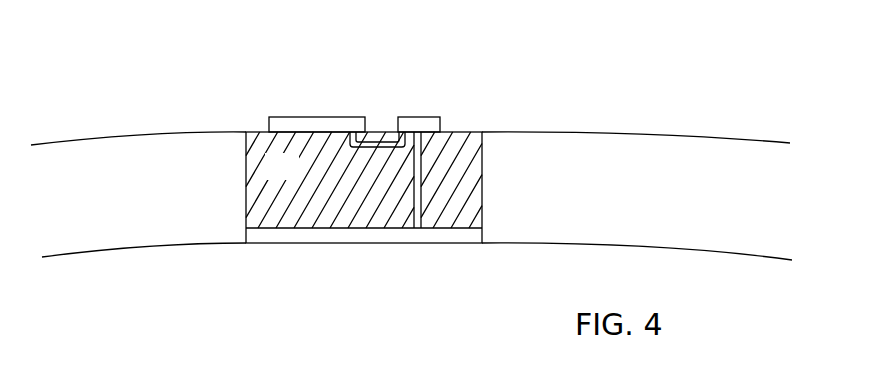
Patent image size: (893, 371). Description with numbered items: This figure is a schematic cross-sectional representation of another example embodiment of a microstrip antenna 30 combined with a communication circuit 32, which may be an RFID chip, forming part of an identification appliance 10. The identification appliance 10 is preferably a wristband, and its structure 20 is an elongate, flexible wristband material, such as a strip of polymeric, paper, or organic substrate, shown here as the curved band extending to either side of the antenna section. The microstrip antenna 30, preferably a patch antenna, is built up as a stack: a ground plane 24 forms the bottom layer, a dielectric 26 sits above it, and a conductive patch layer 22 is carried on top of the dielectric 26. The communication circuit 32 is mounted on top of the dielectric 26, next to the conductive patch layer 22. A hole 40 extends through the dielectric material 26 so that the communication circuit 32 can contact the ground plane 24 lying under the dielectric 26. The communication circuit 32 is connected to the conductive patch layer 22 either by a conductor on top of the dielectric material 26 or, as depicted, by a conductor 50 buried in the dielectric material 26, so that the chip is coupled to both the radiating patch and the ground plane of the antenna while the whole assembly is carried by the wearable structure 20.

The identification appliance 10 is at (180, 97).
The structure 20 is at (198, 197).
The conductive patch layer 22 is at (281, 123).
The ground plane 24 is at (258, 240).
The dielectric 26 is at (294, 176).
The microstrip antenna 30 is at (457, 57).
The communication circuit 32 is at (441, 117).
The hole 40 is at (428, 210).
The conductor 50 is at (373, 138).